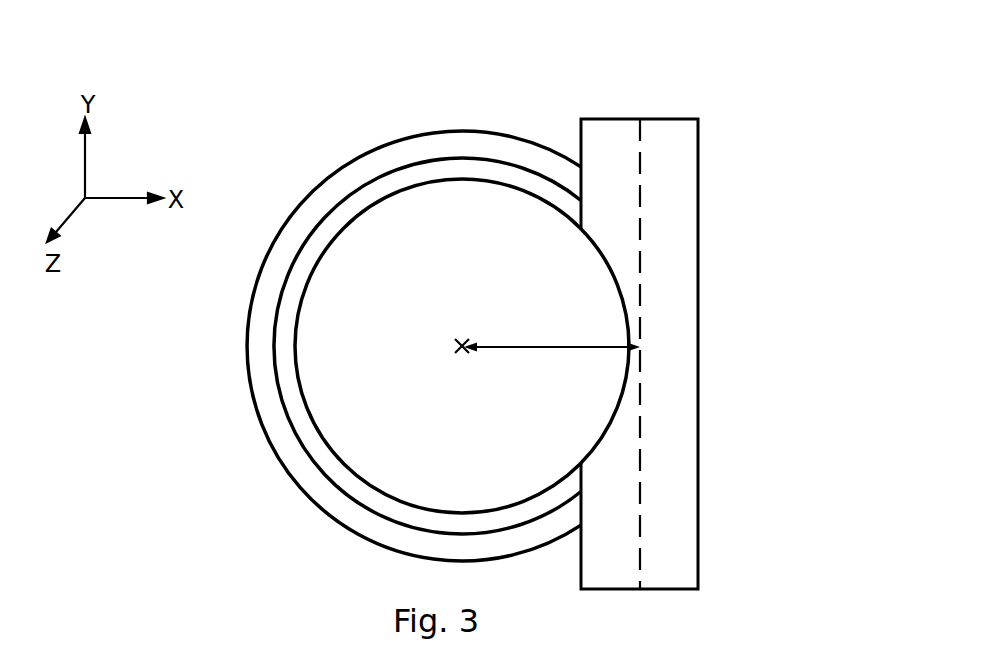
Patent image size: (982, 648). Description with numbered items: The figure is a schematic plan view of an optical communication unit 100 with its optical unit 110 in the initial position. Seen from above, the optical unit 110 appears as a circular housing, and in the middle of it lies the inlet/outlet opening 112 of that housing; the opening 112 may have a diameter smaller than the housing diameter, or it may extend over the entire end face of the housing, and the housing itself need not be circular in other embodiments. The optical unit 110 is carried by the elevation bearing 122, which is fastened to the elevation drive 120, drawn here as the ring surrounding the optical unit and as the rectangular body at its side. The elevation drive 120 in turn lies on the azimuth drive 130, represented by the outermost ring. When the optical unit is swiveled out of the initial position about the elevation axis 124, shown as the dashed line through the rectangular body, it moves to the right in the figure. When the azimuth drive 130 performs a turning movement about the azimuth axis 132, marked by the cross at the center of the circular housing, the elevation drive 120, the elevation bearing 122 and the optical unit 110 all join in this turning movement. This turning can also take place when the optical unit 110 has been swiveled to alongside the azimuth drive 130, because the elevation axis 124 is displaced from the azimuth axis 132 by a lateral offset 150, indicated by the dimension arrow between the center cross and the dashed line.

The optical communication unit 100 is at (286, 94).
The optical unit 110 is at (462, 284).
The inlet/outlet opening 112 is at (455, 220).
The elevation drive 120 is at (508, 160).
The elevation bearing 122 is at (698, 252).
The elevation axis 124 is at (640, 180).
The azimuth drive 130 is at (302, 492).
The azimuth axis 132 is at (459, 351).
The lateral offset 150 is at (582, 348).